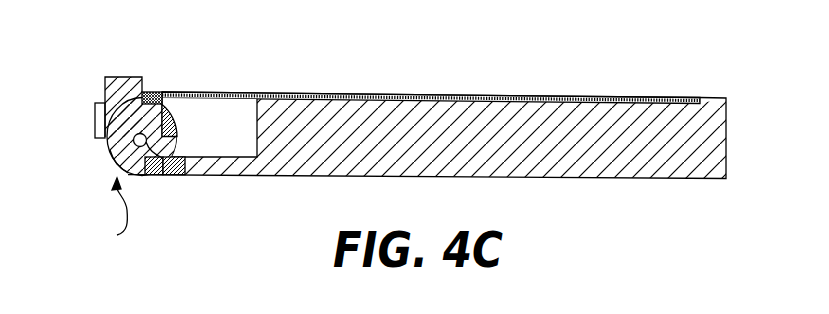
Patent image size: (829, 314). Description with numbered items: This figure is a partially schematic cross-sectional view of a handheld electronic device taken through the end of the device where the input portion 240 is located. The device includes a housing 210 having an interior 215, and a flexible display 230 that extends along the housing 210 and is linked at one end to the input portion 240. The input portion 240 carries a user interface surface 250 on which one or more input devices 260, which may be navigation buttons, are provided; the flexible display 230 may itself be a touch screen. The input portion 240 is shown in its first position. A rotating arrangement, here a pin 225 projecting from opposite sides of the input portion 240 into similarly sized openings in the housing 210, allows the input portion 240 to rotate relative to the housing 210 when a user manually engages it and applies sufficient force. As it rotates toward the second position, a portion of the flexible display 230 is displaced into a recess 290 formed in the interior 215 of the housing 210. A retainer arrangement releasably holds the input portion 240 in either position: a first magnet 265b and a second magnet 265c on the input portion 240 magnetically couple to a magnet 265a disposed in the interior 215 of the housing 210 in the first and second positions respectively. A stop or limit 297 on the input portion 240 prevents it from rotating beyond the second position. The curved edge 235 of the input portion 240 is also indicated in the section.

The housing 210 is at (715, 98).
The interior 215 is at (453, 146).
The flexible display 230 is at (478, 97).
The user interface surface 250 is at (105, 96).
The input devices 260 is at (95, 117).
The stop or limit 297 is at (157, 92).
The recess 290 is at (223, 148).
The magnet 265a is at (174, 176).
The first magnet 265b is at (176, 124).
The second magnet 265c is at (135, 177).
The pin 225 is at (156, 176).
The curved edge 235 is at (116, 164).
The input portion 240 is at (100, 215).